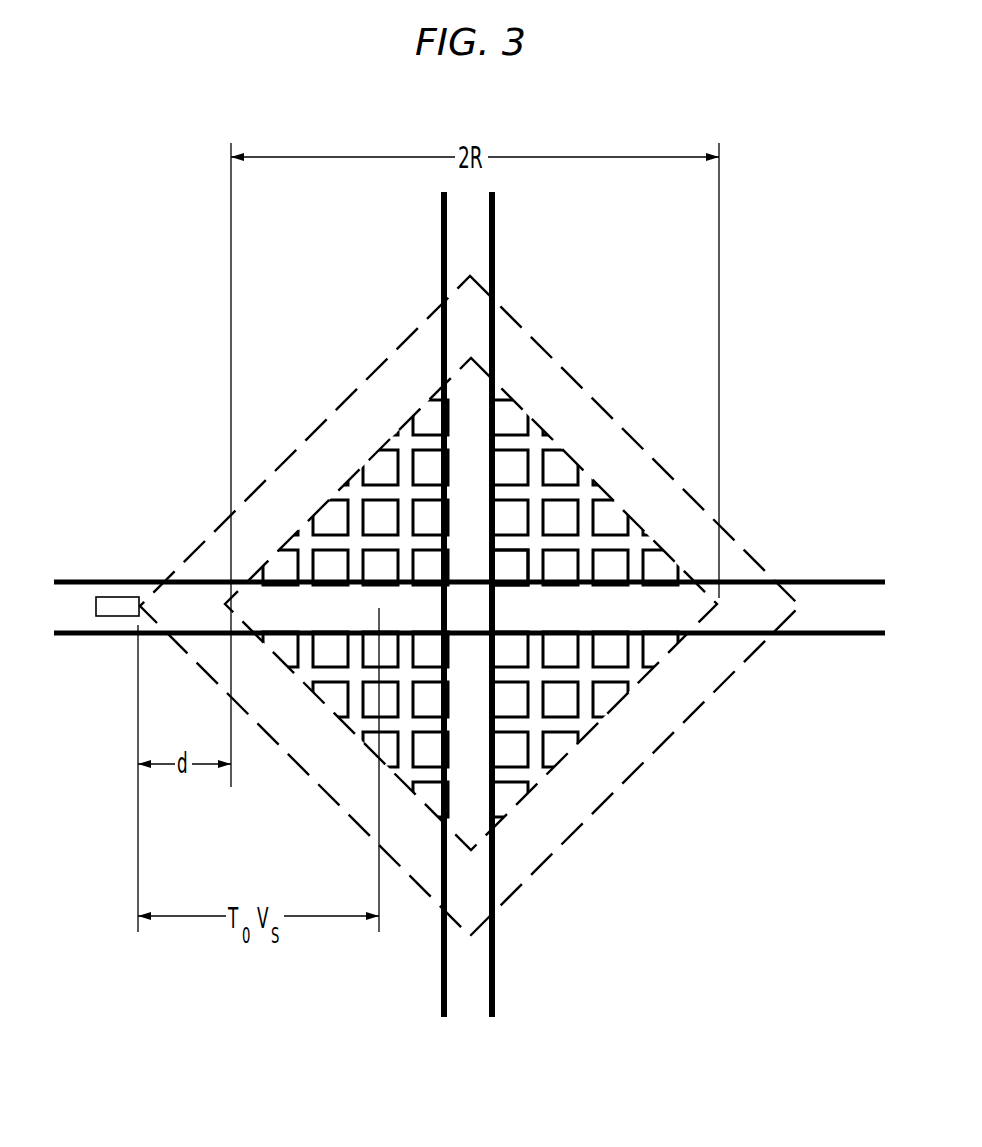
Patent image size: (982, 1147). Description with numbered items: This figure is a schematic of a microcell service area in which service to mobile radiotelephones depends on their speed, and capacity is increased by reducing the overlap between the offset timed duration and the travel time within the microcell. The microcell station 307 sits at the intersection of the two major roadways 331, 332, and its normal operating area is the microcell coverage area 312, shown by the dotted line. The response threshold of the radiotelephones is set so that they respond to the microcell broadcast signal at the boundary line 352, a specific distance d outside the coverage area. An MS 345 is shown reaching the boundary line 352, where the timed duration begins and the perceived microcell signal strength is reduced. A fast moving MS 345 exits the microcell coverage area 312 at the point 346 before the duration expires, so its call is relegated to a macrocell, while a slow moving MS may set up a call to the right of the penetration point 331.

The microcell station 307 is at (530, 566).
The microcell coverage area 312 is at (398, 493).
The major roadway 331 is at (368, 607).
The major roadway 332 is at (468, 522).
The MS 345 is at (117, 597).
The exit point 346 is at (717, 611).
The boundary line 352 is at (362, 386).